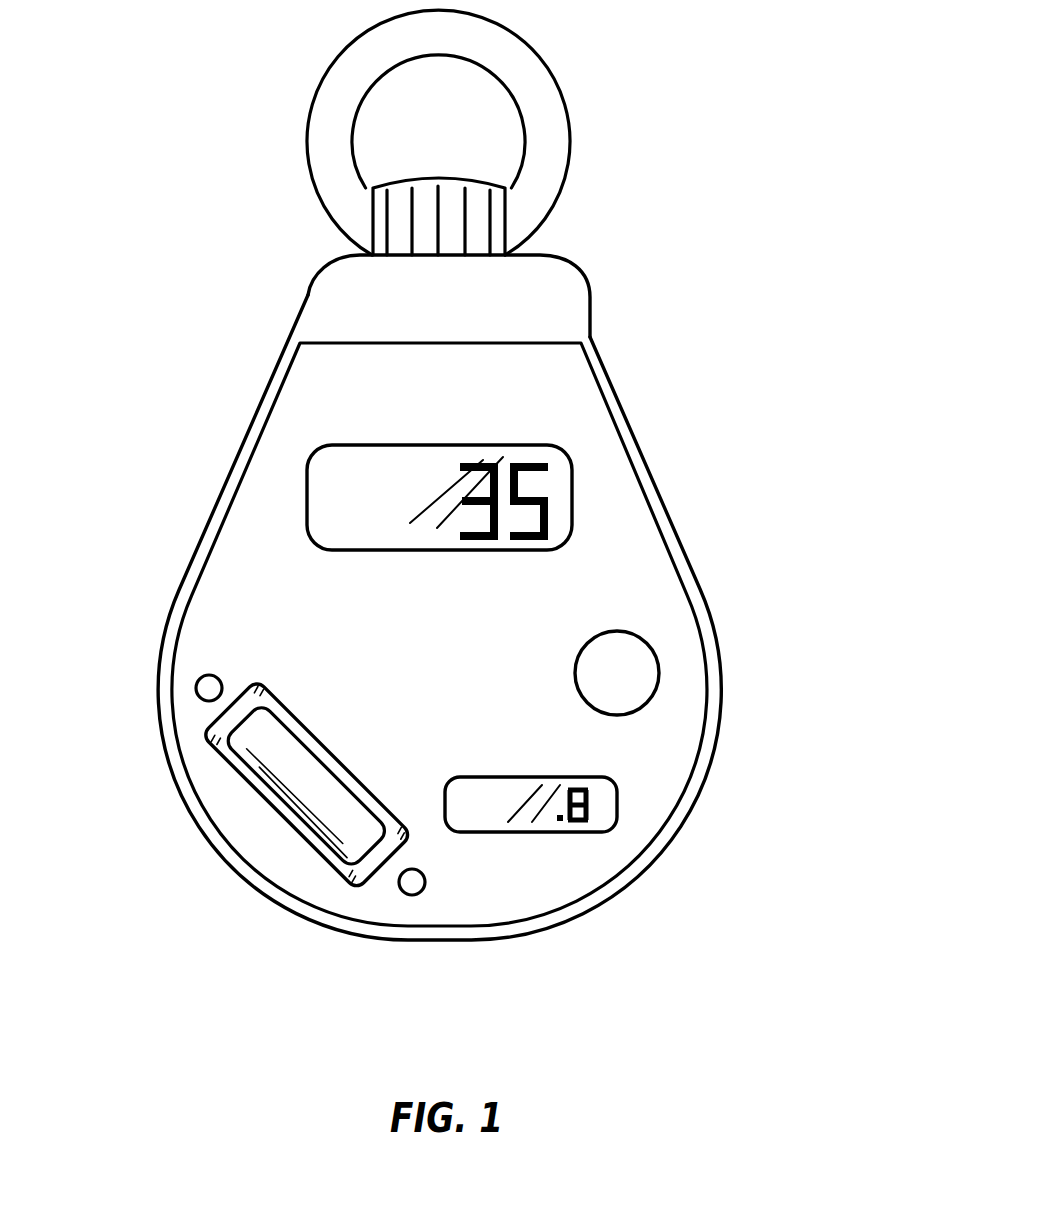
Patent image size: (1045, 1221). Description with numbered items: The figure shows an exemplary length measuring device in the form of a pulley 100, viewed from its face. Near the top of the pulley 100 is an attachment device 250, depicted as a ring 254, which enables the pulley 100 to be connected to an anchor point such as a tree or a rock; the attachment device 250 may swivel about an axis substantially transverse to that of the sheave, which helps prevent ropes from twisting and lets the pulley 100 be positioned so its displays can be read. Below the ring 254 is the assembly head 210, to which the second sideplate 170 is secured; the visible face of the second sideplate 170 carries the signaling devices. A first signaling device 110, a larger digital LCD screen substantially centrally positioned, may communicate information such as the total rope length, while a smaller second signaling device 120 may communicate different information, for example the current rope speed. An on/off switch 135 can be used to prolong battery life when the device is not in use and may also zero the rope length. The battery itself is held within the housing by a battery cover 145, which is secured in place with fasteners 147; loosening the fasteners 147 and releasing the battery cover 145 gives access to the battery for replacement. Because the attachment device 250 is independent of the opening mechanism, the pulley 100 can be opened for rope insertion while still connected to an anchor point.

The pulley 100 is at (770, 514).
The first signaling device 110 is at (340, 500).
The second signaling device 120 is at (602, 805).
The on/off switch 135 is at (623, 678).
The battery cover 145 is at (277, 773).
The fasteners 147 is at (209, 688).
The second sideplate 170 is at (546, 399).
The assembly head 210 is at (557, 305).
The attachment device 250 is at (535, 132).
The ring 254 is at (540, 82).